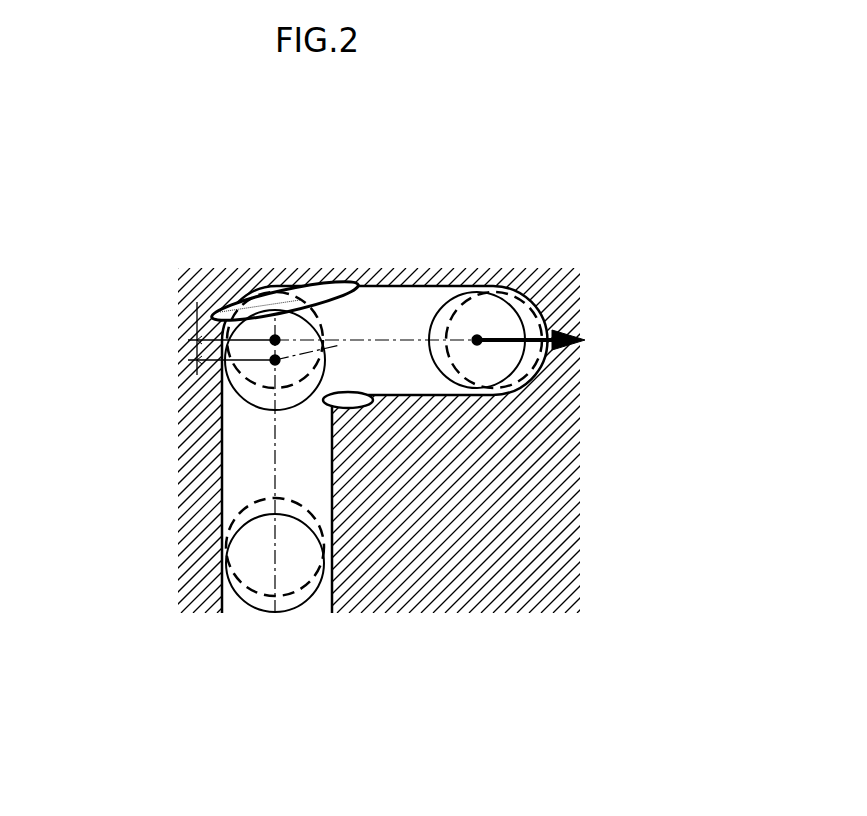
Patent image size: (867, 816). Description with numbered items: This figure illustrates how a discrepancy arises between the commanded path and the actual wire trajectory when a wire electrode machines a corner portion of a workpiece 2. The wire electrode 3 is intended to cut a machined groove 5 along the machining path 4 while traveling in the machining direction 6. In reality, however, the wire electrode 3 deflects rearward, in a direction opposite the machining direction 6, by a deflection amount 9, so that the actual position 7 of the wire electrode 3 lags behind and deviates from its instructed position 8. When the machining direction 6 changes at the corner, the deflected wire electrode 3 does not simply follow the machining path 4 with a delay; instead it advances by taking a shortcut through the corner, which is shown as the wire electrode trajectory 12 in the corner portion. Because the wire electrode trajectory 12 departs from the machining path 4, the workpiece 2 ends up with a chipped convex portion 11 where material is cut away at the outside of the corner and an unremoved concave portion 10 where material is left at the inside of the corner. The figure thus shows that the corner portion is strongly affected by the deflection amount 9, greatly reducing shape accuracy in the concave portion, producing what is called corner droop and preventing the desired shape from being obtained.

The workpiece 2 is at (535, 515).
The wire electrode 3 is at (302, 588).
The machining path 4 is at (270, 470).
The machined groove 5 is at (410, 312).
The machining direction 6 is at (555, 332).
The actual position 7 is at (225, 573).
The instructed position 8 is at (252, 505).
The deflection amount 9 is at (197, 352).
The unremoved concave portion 10 is at (297, 287).
The chipped convex portion 11 is at (365, 403).
The wire electrode trajectory 12 is at (338, 348).